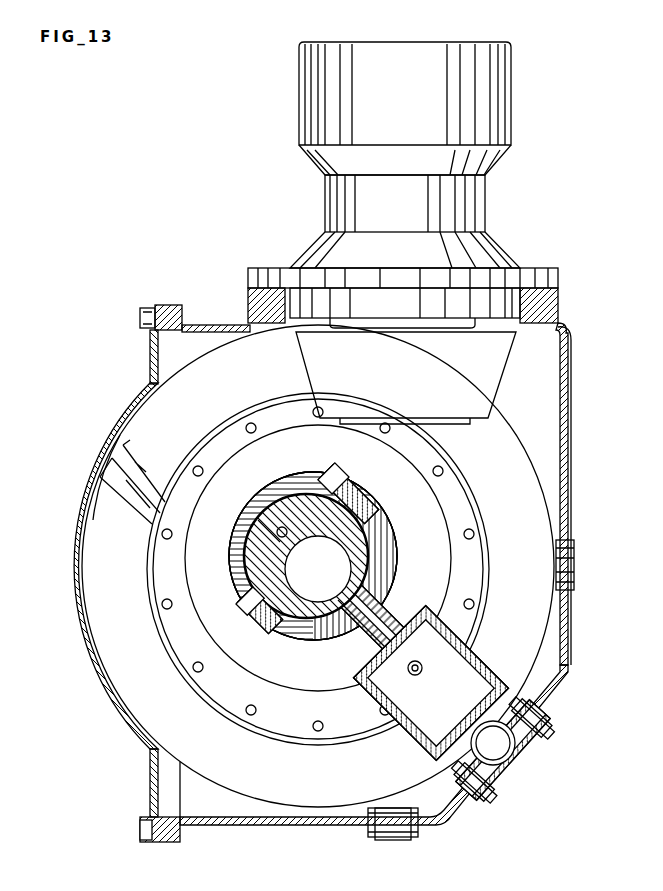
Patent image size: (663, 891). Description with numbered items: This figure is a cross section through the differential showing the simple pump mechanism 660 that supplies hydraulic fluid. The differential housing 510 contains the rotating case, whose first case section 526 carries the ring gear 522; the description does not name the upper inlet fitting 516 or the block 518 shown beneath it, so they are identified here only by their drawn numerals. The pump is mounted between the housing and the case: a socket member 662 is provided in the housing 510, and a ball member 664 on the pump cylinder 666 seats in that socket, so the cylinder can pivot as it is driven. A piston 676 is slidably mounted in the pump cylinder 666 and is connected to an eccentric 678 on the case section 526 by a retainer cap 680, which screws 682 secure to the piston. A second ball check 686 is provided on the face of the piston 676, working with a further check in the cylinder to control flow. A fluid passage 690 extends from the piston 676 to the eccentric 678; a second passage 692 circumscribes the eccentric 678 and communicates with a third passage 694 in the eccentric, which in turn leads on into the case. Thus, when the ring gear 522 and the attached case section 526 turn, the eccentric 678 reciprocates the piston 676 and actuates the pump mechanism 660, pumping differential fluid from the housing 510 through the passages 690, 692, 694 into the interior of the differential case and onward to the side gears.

The differential housing 510 is at (250, 828).
The inlet pipe fitting 516 is at (472, 131).
The inlet block 518 is at (425, 322).
The ring gear 522 is at (120, 487).
The case section 526 is at (318, 569).
The pump mechanism 660 is at (412, 756).
The socket member 662 is at (510, 760).
The ball member 664 is at (505, 790).
The pump cylinder 666 is at (478, 662).
The piston 676 is at (358, 654).
The eccentric 678 is at (352, 566).
The retainer cap 680 is at (270, 490).
The screws 682 is at (324, 468).
The second ball check 686 is at (420, 680).
The fluid passage 690 is at (372, 612).
The second passage 692 is at (362, 530).
The third passage 694 is at (275, 528).